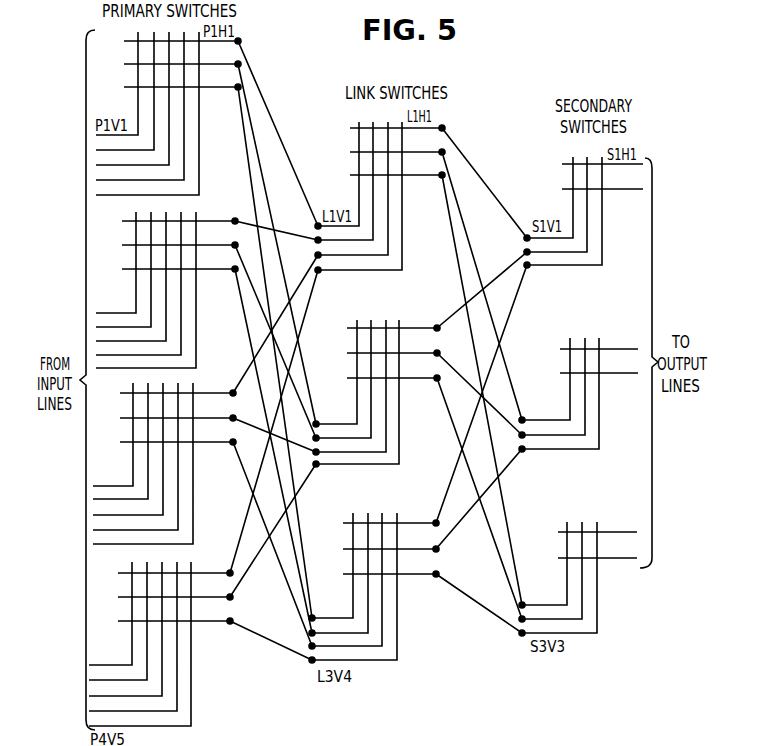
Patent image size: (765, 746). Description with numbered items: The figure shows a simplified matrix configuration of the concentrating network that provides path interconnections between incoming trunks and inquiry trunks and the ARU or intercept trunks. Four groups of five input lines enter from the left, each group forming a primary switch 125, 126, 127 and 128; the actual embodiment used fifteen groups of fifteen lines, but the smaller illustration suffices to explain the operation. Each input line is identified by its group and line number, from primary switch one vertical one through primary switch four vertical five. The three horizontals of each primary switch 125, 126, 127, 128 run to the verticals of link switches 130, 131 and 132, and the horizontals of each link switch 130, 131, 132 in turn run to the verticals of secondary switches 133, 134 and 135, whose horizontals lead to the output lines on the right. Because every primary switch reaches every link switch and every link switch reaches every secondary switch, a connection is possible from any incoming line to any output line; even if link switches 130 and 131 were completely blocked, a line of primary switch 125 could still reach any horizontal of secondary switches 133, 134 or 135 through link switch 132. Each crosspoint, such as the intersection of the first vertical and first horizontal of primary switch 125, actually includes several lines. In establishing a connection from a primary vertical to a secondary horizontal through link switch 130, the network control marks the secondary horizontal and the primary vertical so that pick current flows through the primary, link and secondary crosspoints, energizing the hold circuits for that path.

The primary switch 125 is at (168, 113).
The primary switch 126 is at (165, 290).
The primary switch 127 is at (164, 463).
The primary switch 128 is at (161, 644).
The link switch 130 is at (380, 197).
The link switch 131 is at (376, 393).
The link switch 132 is at (374, 588).
The secondary switch 133 is at (583, 212).
The secondary switch 134 is at (578, 395).
The secondary switch 135 is at (578, 579).